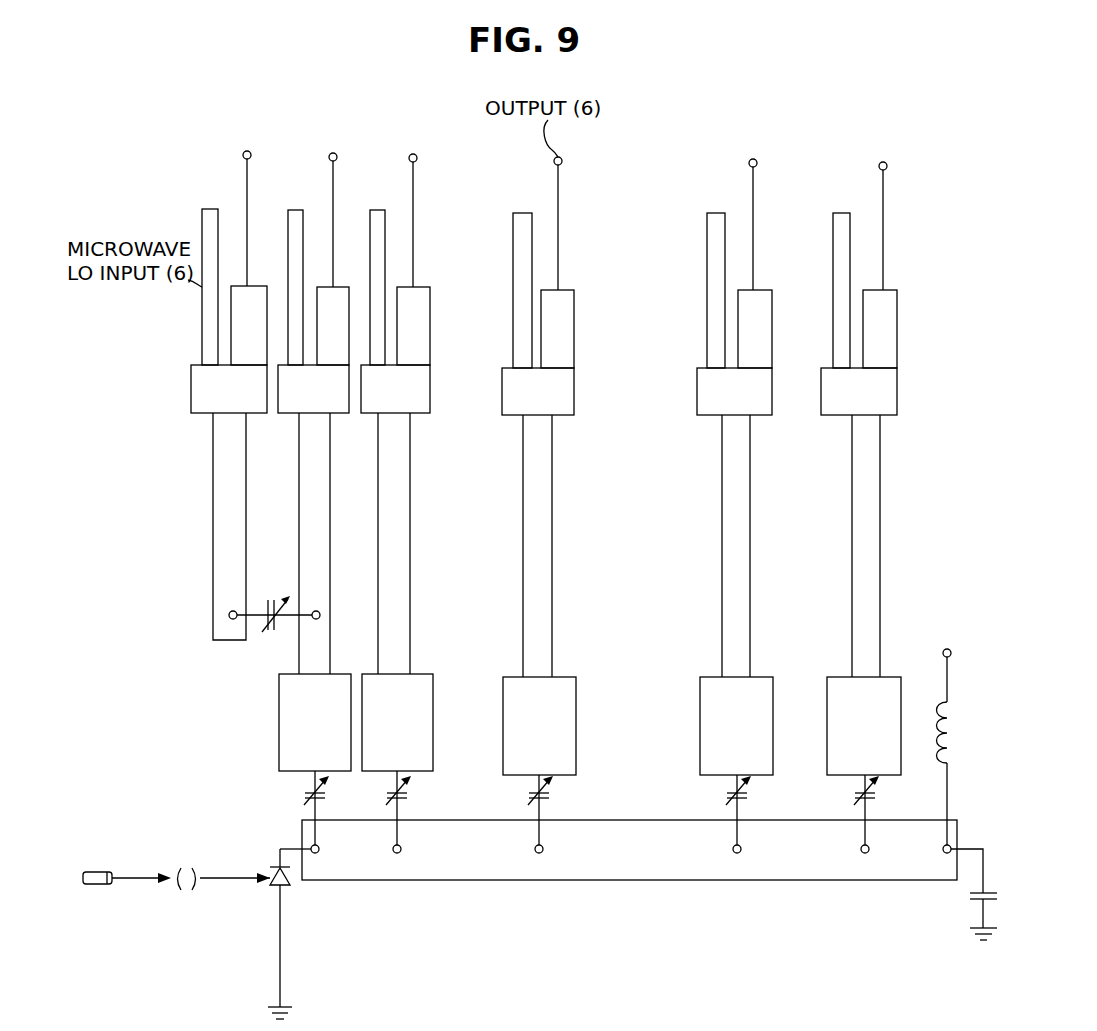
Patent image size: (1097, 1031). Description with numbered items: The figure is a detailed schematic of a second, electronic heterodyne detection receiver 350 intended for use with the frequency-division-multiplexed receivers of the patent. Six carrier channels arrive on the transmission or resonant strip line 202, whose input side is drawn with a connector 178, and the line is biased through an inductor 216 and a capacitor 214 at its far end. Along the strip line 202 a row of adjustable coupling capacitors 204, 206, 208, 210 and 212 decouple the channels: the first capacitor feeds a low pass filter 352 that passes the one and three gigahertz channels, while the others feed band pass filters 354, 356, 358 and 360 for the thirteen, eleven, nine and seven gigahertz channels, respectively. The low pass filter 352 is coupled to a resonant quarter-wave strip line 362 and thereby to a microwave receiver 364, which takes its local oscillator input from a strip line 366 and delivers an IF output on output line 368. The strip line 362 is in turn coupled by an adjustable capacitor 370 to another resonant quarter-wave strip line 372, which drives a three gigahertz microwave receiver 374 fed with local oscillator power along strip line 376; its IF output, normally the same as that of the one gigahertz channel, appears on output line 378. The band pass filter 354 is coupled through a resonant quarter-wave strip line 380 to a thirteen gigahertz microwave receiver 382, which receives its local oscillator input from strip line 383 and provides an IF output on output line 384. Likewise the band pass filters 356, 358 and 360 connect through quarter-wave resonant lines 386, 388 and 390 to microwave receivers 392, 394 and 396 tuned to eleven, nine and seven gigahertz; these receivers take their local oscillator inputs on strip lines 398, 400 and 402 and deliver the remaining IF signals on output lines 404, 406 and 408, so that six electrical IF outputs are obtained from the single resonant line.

The microwave input connector 178 is at (93, 872).
The resonant strip line 202 is at (517, 897).
The adjustable coupling capacitor 204 is at (325, 797).
The adjustable coupling capacitor 206 is at (407, 797).
The adjustable coupling capacitor 208 is at (549, 797).
The adjustable coupling capacitor 210 is at (747, 797).
The adjustable coupling capacitor 212 is at (875, 797).
The bypass capacitor 214 is at (985, 870).
The bias inductor 216 is at (953, 736).
The electronic heterodyne detection receiver 350 is at (674, 169).
The low pass filter 352 is at (279, 727).
The band pass filter 354 is at (433, 692).
The band pass filter 356 is at (576, 712).
The band pass filter 358 is at (773, 690).
The band pass filter 360 is at (901, 690).
The resonant quarter-wave strip line 362 is at (330, 548).
The microwave receiver 364 is at (278, 414).
The strip line 366 is at (288, 228).
The output line 368 is at (333, 177).
The adjustable capacitor 370 is at (268, 603).
The resonant quarter-wave strip line 372 is at (213, 543).
The microwave receiver 374 is at (191, 413).
The strip line 376 is at (202, 227).
The output line 378 is at (247, 176).
The resonant quarter-wave strip line 380 is at (410, 538).
The microwave receiver 382 is at (420, 414).
The strip line 383 is at (383, 206).
The output line 384 is at (413, 179).
The quarter-wave resonant line 386 is at (552, 540).
The quarter-wave resonant line 388 is at (750, 540).
The quarter-wave resonant line 390 is at (880, 530).
The microwave receiver 392 is at (555, 416).
The microwave receiver 394 is at (758, 416).
The microwave receiver 396 is at (886, 416).
The strip line 398 is at (513, 228).
The strip line 400 is at (707, 228).
The strip line 402 is at (833, 228).
The output line 404 is at (558, 198).
The output line 406 is at (753, 212).
The output line 408 is at (883, 213).